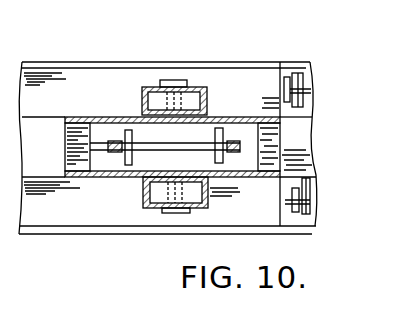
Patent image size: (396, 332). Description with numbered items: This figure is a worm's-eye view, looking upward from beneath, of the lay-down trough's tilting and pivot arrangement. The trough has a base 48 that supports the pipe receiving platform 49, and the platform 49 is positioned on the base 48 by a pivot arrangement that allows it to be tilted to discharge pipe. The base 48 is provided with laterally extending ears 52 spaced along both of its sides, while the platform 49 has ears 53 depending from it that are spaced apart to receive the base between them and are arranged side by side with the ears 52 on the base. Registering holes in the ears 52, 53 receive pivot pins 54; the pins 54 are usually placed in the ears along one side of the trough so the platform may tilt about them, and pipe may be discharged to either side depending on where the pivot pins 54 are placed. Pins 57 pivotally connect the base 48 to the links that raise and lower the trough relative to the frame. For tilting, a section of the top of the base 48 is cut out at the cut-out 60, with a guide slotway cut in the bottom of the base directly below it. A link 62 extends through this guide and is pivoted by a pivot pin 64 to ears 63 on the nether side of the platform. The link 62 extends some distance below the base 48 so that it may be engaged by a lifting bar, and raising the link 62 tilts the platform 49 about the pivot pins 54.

The base 48 is at (304, 163).
The pipe receiving platform 49 is at (103, 217).
The ears 52 is at (312, 98).
The ears 53 is at (287, 78).
The pivot pins 54 is at (301, 89).
The pins 57 is at (176, 80).
The cut-out 60 is at (104, 137).
The link 62 is at (119, 151).
The ears 63 is at (133, 163).
The pivot pin 64 is at (211, 143).